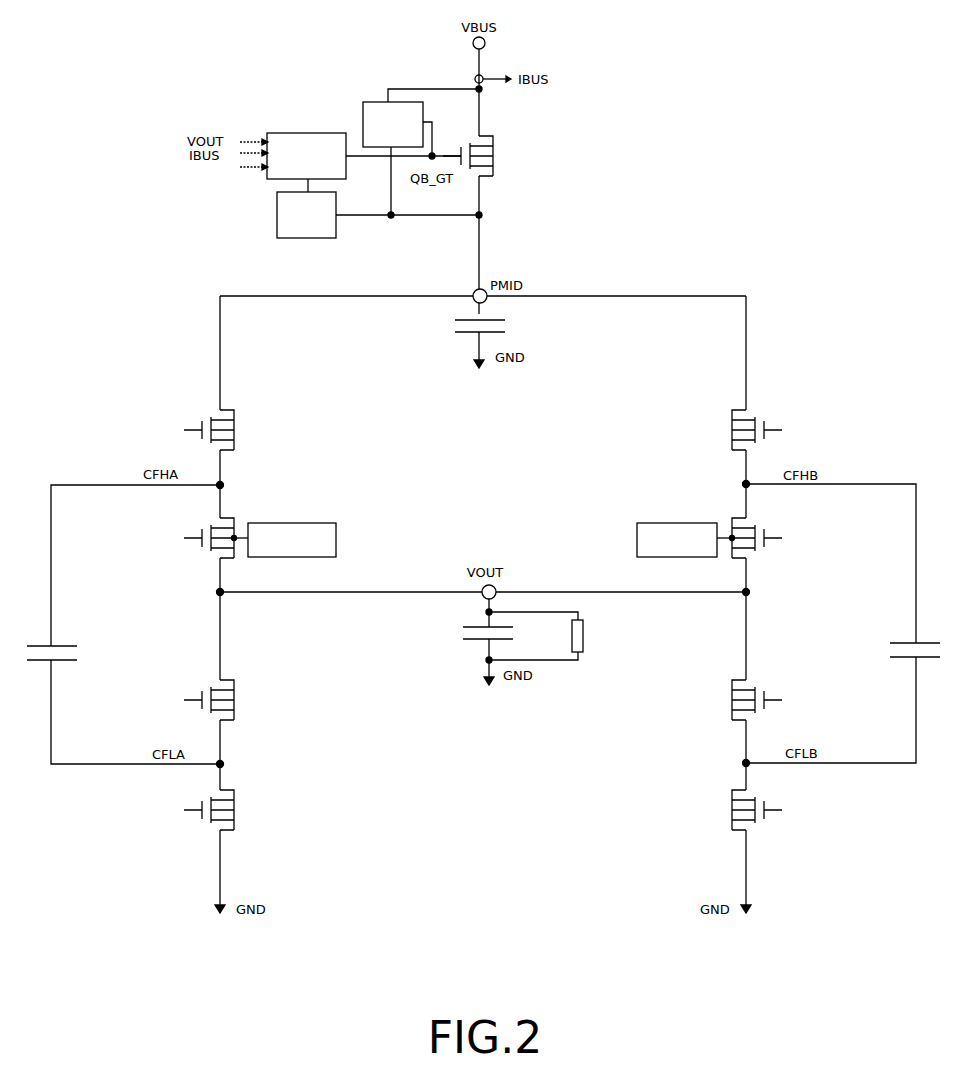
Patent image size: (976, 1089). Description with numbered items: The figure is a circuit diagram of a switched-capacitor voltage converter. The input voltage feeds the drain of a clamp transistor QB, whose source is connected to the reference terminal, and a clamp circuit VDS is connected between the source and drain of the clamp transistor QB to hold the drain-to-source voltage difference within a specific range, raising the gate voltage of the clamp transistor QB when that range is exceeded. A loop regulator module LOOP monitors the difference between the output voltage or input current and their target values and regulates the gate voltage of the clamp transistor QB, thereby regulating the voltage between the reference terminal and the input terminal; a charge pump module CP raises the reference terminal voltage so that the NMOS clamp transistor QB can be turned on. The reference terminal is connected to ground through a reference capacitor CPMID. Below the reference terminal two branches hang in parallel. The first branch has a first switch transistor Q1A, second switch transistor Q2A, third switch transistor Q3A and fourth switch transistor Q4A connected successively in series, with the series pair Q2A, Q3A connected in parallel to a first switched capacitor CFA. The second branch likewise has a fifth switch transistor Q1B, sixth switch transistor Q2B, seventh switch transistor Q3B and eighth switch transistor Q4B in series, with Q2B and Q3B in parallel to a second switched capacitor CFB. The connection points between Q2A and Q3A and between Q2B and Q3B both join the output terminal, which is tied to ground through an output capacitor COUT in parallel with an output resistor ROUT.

The clamp transistor QB is at (482, 151).
The clamp circuit VDS is at (393, 124).
The loop regulator module LOOP is at (306, 156).
The CP module CP is at (306, 215).
The reference capacitor CPMID is at (506, 326).
The first switch transistor Q1A is at (222, 426).
The second switch transistor Q2A is at (218, 534).
The third switch transistor Q3A is at (222, 695).
The fourth switch transistor Q4A is at (222, 806).
The fifth switch transistor Q1B is at (742, 426).
The sixth switch transistor Q2B is at (747, 533).
The seventh switch transistor Q3B is at (743, 696).
The eighth switch transistor Q4B is at (743, 806).
The first switched capacitor CFA is at (68, 653).
The second switched capacitor CFB is at (897, 650).
The output capacitor COUT is at (466, 633).
The output resistor ROUT is at (600, 636).